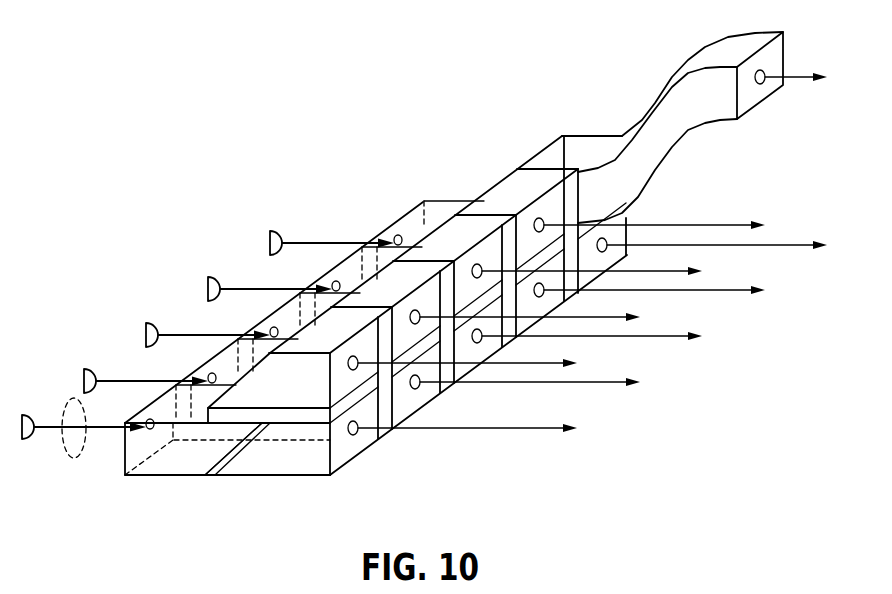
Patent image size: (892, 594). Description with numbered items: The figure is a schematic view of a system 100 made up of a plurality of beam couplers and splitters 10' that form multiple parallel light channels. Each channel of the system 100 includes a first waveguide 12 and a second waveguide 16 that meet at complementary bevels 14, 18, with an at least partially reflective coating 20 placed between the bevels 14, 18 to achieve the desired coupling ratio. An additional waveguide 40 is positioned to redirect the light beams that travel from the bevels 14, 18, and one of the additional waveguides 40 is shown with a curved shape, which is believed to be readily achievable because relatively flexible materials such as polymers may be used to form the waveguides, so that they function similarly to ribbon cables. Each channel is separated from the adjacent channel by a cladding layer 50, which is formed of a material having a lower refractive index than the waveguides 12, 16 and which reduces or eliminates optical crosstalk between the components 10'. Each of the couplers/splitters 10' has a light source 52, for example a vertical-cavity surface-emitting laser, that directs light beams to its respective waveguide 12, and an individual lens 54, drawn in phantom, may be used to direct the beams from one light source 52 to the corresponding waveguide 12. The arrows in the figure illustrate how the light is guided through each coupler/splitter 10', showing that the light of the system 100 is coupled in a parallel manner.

The system 100 is at (357, 113).
The first waveguide 12 is at (175, 478).
The bevel 14 is at (240, 478).
The second waveguide 16 is at (318, 457).
The bevel 18 is at (250, 440).
The at least partially reflective coating 20 is at (217, 467).
The additional waveguide 40 is at (323, 335).
The cladding layer 50 is at (383, 405).
The light source 52 is at (270, 232).
The lens 54 is at (73, 458).
The beam coupler and splitter 10' is at (592, 277).